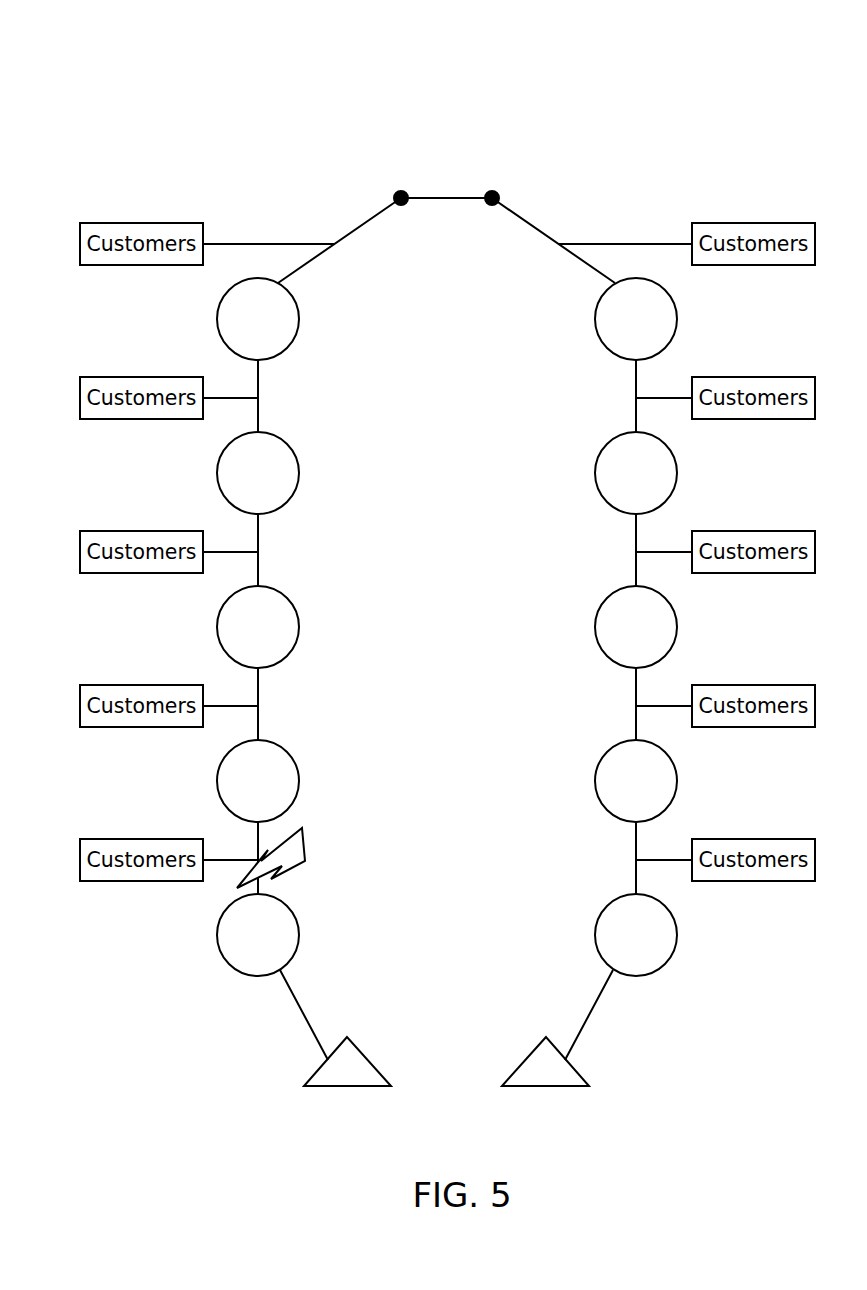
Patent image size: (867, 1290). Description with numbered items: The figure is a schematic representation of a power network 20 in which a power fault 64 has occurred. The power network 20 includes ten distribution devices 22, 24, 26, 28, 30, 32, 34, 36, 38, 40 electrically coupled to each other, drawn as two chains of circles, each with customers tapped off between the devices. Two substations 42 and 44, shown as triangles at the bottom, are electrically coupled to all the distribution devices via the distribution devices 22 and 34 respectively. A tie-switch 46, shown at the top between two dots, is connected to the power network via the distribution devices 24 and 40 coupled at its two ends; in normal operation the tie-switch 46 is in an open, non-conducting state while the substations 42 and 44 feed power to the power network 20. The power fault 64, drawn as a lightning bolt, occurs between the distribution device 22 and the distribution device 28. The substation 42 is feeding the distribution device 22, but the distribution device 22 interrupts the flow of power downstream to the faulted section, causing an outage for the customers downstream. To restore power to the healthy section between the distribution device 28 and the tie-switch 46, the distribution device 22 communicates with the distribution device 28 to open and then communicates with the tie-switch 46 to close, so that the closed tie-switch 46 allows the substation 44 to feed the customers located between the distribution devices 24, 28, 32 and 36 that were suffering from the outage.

The power network 20 is at (700, 63).
The distribution device 22 is at (245, 947).
The distribution device 24 is at (245, 331).
The distribution device 26 is at (623, 639).
The distribution device 28 is at (245, 793).
The distribution device 30 is at (623, 793).
The distribution device 32 is at (245, 639).
The distribution device 34 is at (623, 947).
The distribution device 36 is at (245, 485).
The distribution device 38 is at (623, 485).
The distribution device 40 is at (623, 331).
The substation 42 is at (348, 1087).
The substation 44 is at (547, 1087).
The tie-switch 46 is at (455, 197).
The power fault 64 is at (306, 845).